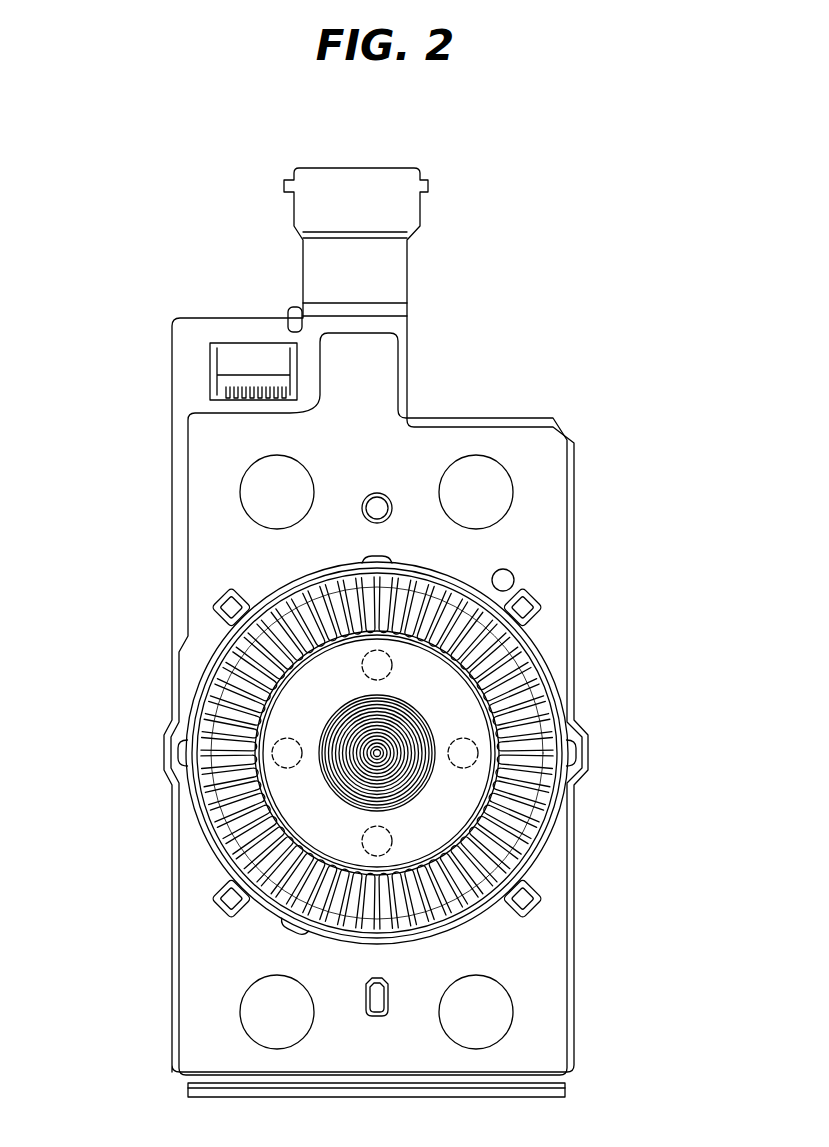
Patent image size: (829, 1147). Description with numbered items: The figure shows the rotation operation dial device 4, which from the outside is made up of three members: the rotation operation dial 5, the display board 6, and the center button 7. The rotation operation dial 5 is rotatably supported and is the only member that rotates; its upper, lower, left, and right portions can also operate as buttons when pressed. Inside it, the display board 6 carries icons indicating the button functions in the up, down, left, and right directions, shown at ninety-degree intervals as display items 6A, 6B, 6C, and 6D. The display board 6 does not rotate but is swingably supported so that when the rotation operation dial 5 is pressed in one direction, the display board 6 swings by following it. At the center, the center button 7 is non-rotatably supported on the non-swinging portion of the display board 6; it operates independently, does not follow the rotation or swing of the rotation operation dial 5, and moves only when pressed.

The rotation operation dial device 4 is at (409, 735).
The rotation operation dial 5 is at (545, 680).
The display board 6 is at (383, 701).
The center button 7 is at (388, 781).
The display item 6A is at (377, 663).
The display item 6B is at (463, 752).
The display item 6C is at (375, 842).
The display item 6D is at (287, 750).